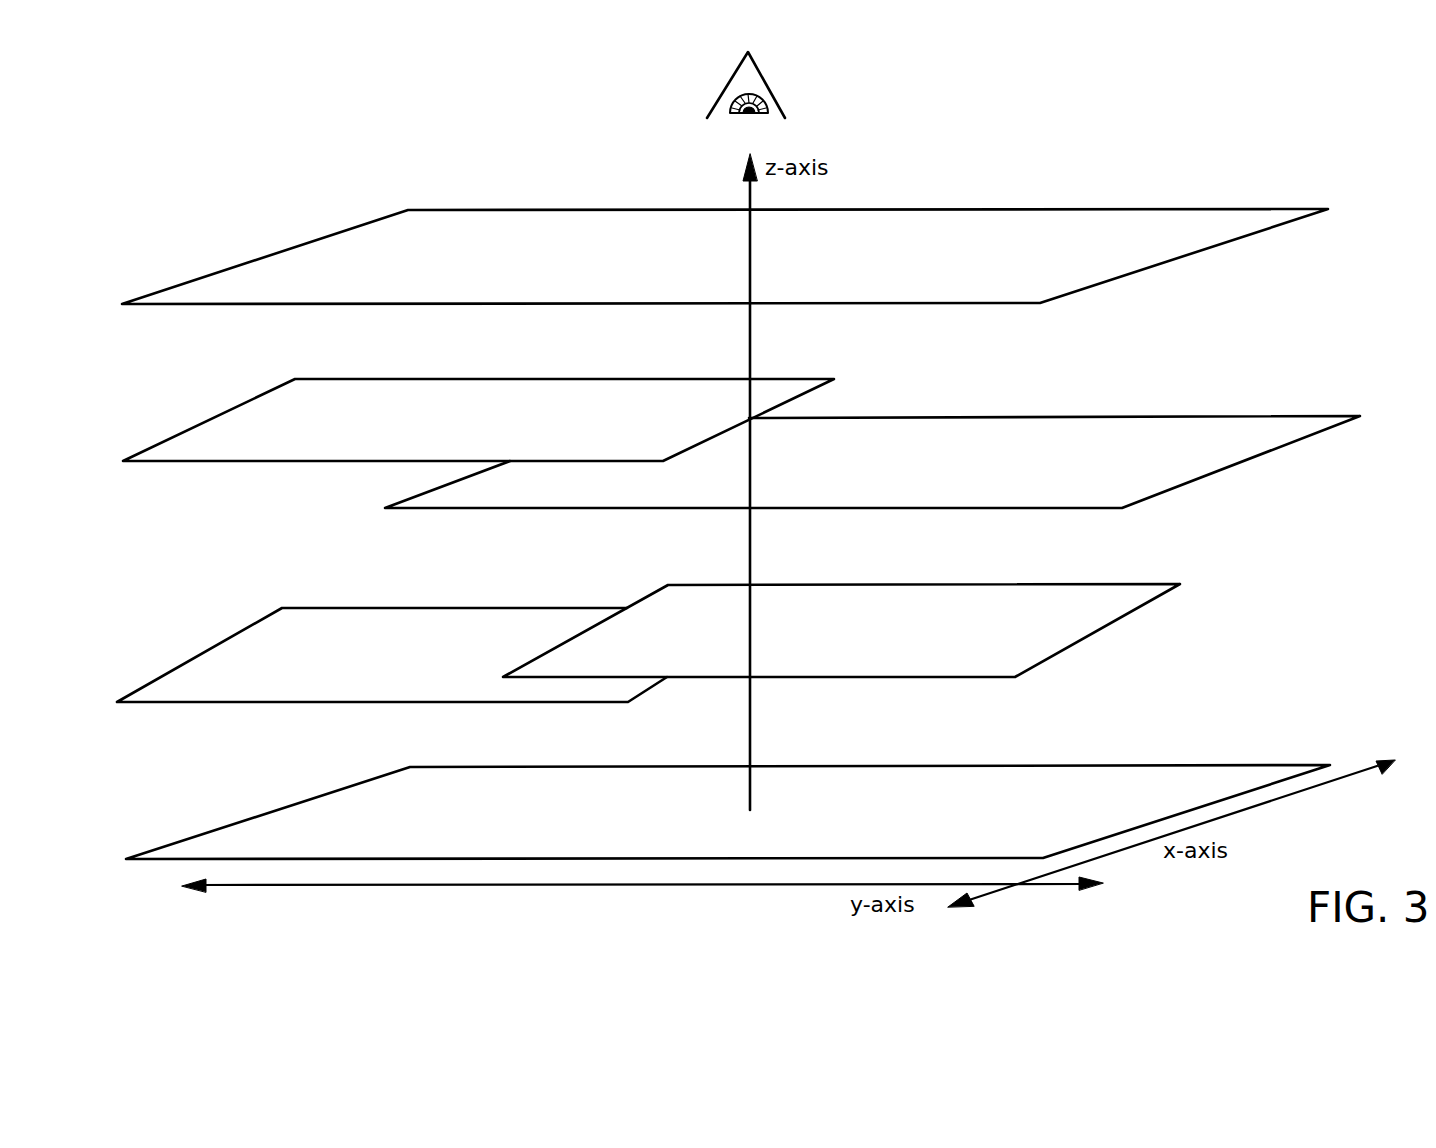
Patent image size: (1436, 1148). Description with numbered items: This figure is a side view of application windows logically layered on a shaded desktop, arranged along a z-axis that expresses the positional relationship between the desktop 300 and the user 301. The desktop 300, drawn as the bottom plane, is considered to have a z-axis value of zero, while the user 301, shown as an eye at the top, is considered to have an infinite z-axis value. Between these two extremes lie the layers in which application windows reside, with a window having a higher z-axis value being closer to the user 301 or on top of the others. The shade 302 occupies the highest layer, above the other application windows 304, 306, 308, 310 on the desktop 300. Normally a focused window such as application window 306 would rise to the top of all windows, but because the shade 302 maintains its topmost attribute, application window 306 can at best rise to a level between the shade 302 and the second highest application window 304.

The desktop 300 is at (985, 820).
The user 301 is at (770, 92).
The shade 302 is at (478, 267).
The application window 304 is at (479, 428).
The application window 306 is at (984, 474).
The application window 308 is at (984, 642).
The application window 310 is at (479, 663).